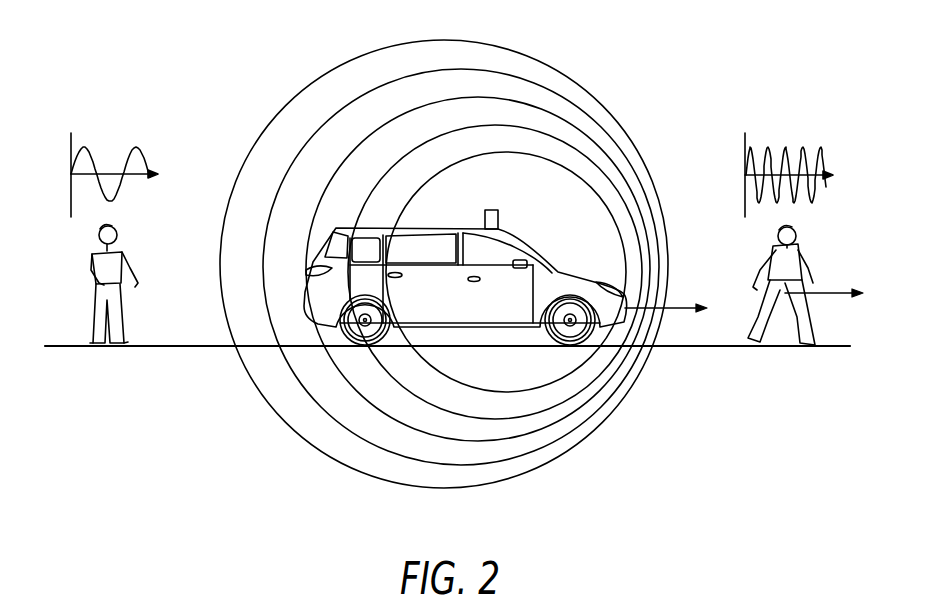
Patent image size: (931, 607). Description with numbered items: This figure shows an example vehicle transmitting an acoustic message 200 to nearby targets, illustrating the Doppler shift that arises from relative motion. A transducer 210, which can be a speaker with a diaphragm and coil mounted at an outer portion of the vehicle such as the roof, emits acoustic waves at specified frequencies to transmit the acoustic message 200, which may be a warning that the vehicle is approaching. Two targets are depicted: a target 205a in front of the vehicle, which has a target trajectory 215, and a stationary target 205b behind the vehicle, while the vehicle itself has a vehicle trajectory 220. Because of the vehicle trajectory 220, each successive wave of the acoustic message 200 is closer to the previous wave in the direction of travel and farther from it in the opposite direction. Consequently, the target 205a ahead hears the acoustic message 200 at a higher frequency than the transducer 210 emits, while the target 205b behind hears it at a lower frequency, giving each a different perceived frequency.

The acoustic message 200 is at (548, 67).
The target 205a is at (800, 258).
The target 205b is at (90, 262).
The transducer 210 is at (498, 222).
The target trajectory 215 is at (828, 294).
The vehicle trajectory 220 is at (684, 306).